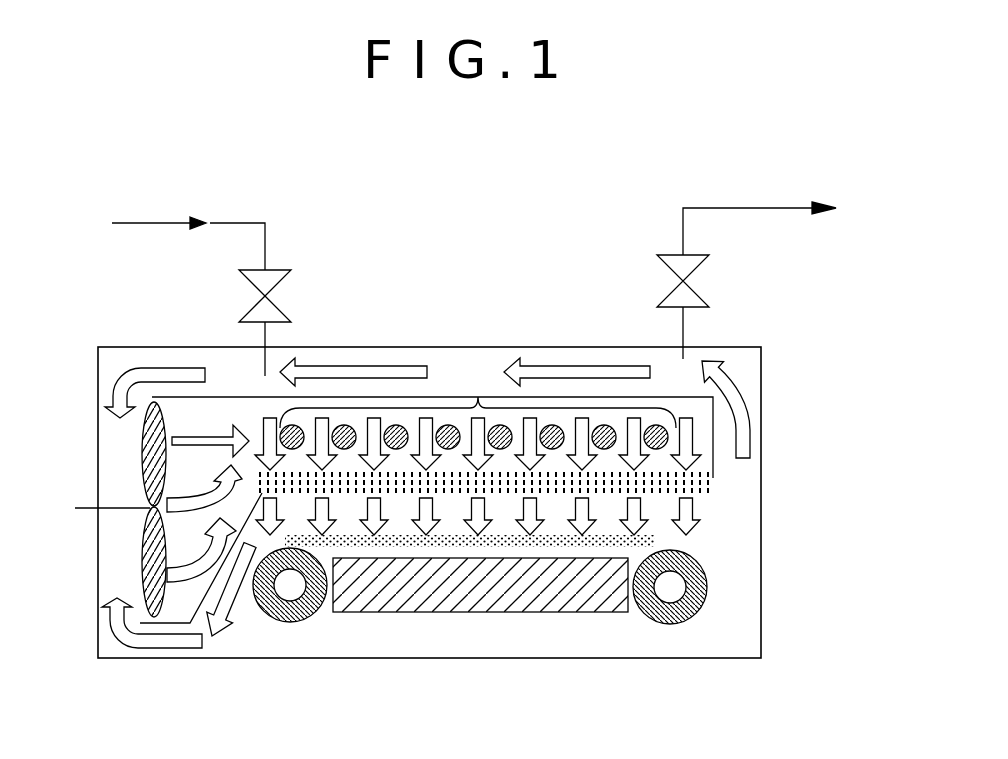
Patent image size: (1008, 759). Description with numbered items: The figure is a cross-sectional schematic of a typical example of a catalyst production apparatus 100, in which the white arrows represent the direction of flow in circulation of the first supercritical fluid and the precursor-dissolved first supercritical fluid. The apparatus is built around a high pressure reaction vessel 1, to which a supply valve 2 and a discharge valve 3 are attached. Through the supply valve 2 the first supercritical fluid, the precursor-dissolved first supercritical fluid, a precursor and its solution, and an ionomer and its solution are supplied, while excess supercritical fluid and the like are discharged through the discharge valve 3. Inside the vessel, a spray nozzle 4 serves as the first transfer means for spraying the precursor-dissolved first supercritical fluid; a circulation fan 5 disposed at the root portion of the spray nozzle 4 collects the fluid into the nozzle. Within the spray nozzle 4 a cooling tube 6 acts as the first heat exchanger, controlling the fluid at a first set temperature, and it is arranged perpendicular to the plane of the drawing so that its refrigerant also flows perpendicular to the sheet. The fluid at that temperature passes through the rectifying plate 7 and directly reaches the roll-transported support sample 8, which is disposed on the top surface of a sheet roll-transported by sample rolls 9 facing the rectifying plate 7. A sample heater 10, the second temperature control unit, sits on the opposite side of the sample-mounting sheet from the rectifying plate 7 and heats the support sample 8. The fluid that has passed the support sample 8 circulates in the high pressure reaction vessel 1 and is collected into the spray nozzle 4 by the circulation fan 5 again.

The catalyst production apparatus 100 is at (483, 277).
The high pressure reaction vessel 1 is at (761, 460).
The supply valve 2 is at (291, 277).
The discharge valve 3 is at (709, 266).
The spray nozzle 4 is at (667, 390).
The circulation fan 5 is at (142, 462).
The cooling tube 6 is at (478, 414).
The rectifying plate 7 is at (710, 487).
The support sample 8 is at (550, 548).
The sample rolls 9 is at (290, 622).
The sample heater 10 is at (485, 598).